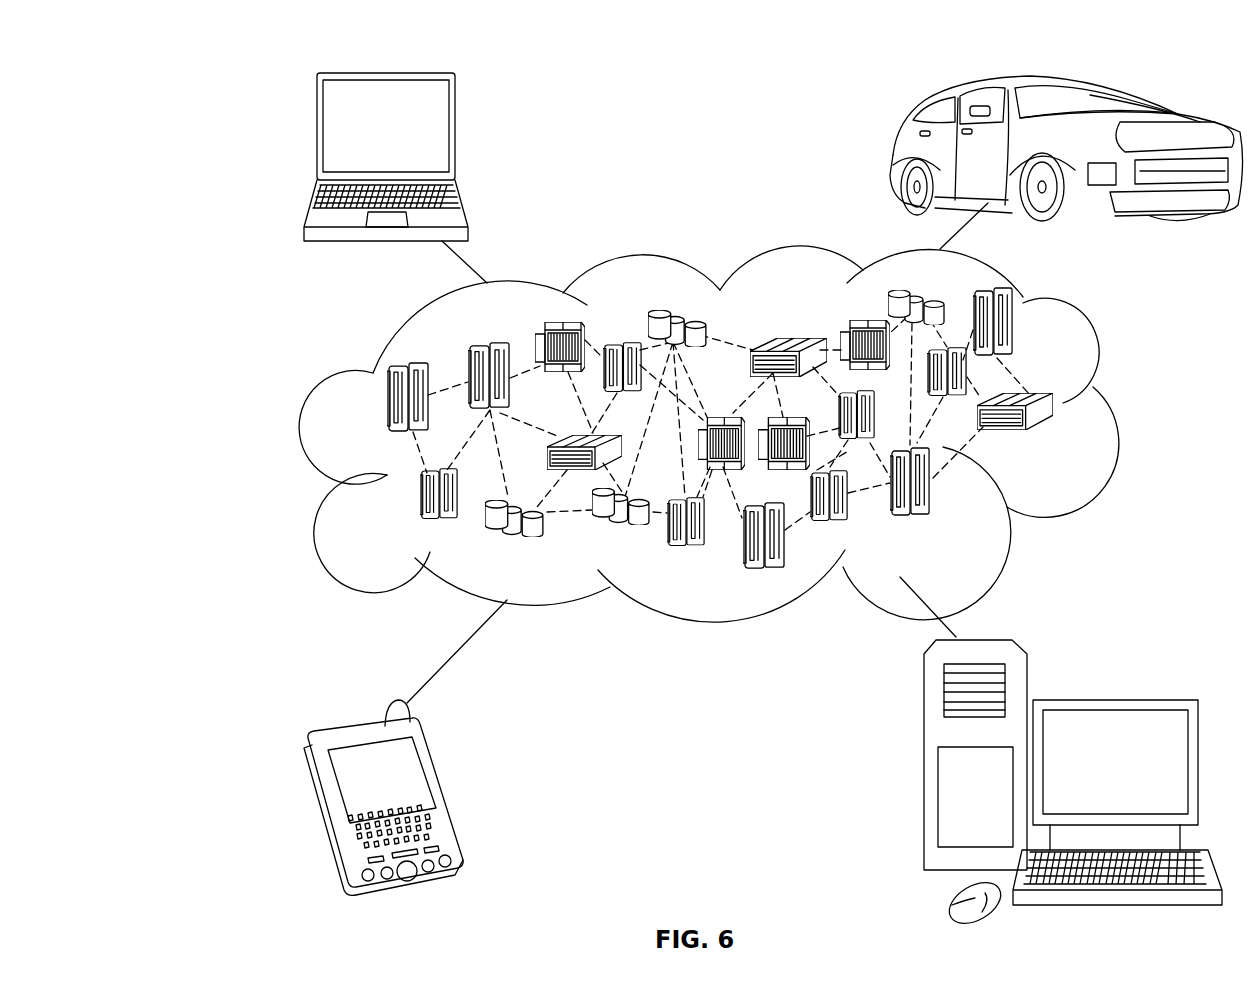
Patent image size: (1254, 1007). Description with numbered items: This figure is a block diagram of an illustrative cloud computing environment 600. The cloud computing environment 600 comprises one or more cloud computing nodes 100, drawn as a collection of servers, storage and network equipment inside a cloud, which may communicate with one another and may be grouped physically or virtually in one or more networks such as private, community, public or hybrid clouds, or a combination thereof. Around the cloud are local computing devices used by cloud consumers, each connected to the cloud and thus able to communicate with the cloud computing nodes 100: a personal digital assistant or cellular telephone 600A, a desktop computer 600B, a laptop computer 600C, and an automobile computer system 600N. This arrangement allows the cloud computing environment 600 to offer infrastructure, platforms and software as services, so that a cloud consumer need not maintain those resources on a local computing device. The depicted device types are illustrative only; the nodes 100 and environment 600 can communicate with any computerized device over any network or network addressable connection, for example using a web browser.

The cloud computing environment 600 is at (192, 72).
The cloud computing nodes 100 is at (1054, 438).
The personal digital assistant (PDA) or cellular telephone 600A is at (447, 791).
The desktop computer 600B is at (1112, 693).
The laptop computer 600C is at (457, 131).
The automobile computer system 600N is at (895, 153).